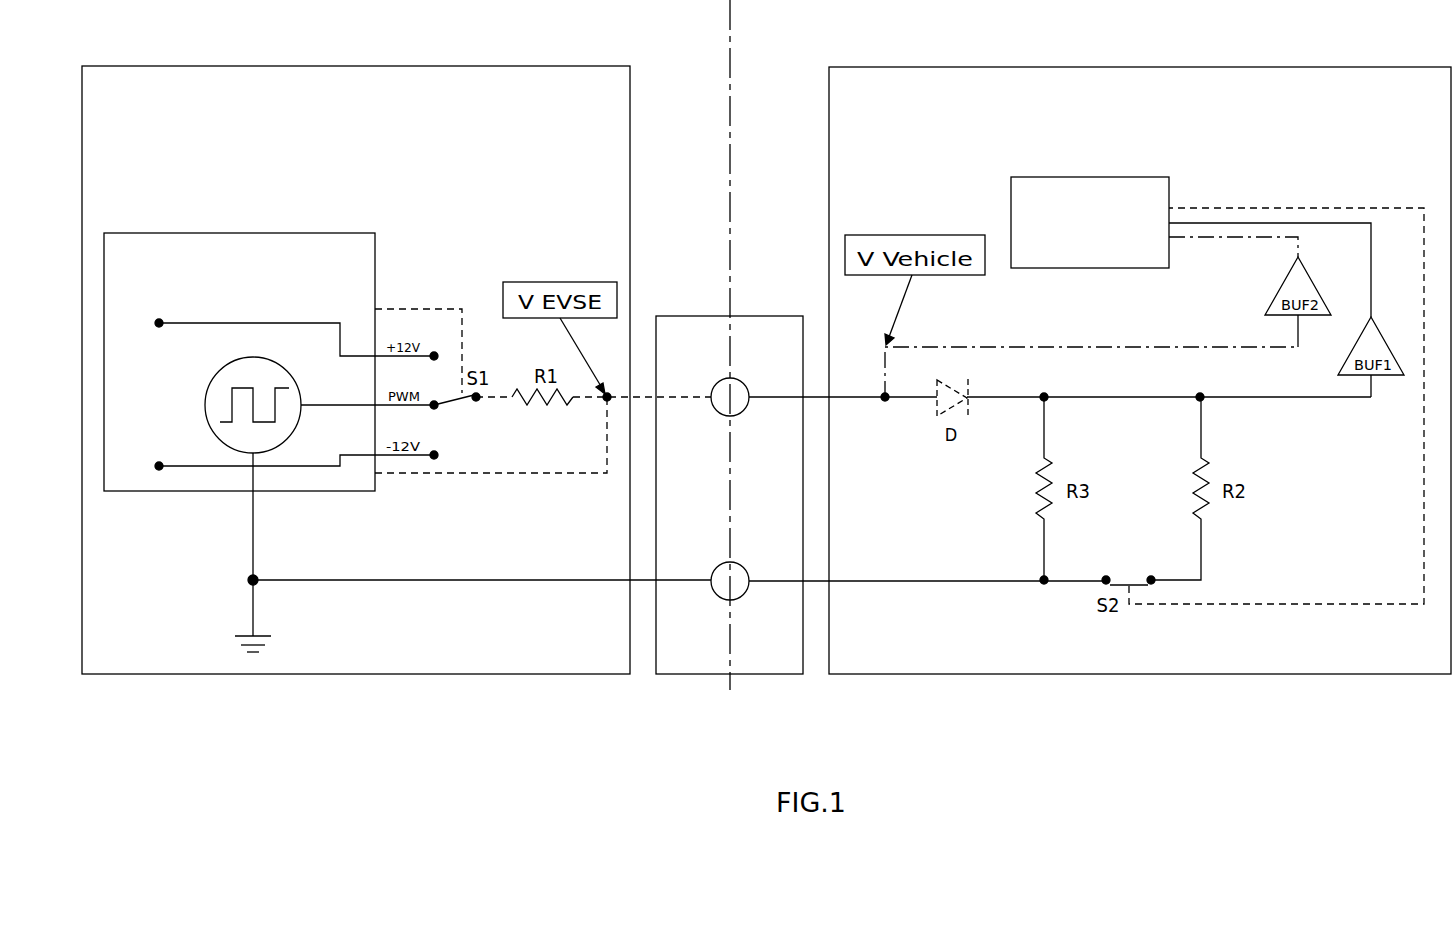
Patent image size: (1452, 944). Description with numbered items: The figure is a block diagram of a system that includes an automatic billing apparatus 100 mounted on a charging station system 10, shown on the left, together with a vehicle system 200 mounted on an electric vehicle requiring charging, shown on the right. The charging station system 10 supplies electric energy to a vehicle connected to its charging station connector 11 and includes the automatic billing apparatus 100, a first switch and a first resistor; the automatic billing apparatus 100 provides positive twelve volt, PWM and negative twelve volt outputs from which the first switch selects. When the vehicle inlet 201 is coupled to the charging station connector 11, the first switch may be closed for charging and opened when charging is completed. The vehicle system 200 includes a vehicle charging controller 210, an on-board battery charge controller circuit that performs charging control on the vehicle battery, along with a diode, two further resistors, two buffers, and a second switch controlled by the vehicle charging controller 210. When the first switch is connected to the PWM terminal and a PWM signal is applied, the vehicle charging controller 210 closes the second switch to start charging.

The charging station system 10 is at (368, 66).
The automatic billing apparatus 100 is at (228, 233).
The charging station connector 11 is at (718, 380).
The vehicle inlet 201 is at (772, 395).
The vehicle system 200 is at (1141, 67).
The vehicle charging controller 210 is at (1090, 177).